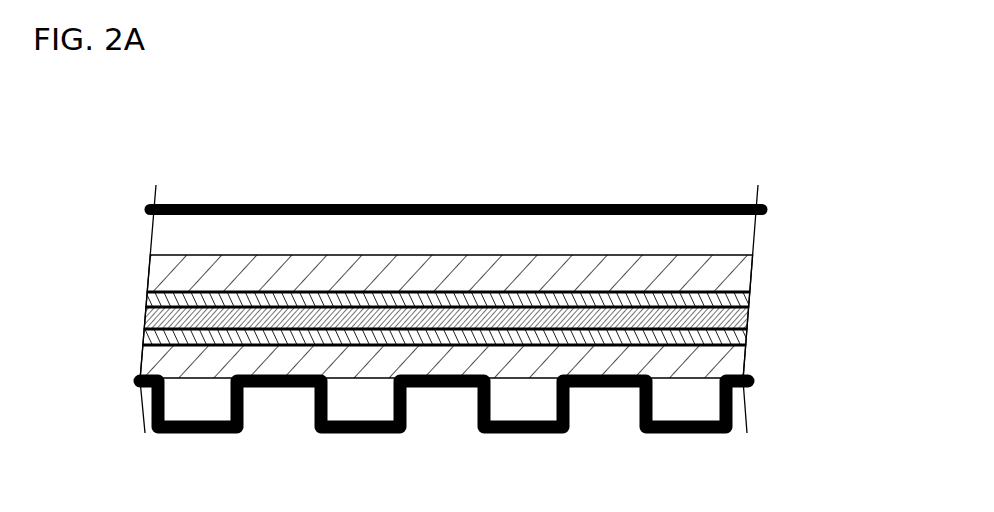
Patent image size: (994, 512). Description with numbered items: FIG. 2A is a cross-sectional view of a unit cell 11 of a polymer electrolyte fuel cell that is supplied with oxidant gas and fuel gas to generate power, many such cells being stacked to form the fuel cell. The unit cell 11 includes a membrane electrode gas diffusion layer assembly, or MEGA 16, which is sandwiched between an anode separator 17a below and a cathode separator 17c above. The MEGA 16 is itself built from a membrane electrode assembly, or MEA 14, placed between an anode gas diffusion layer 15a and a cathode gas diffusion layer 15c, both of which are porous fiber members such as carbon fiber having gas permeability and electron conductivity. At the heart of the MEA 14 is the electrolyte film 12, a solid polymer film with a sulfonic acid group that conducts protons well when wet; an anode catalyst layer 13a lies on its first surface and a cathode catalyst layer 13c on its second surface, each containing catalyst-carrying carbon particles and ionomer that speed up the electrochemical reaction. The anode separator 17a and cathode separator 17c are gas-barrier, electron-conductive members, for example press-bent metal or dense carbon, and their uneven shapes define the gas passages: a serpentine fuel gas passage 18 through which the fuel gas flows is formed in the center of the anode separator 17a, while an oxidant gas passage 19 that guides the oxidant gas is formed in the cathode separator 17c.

The unit cell 11 is at (544, 294).
The electrolyte film 12 is at (747, 320).
The anode catalyst layer 13a is at (746, 340).
The cathode catalyst layer 13c is at (746, 300).
The membrane electrode assembly 14 is at (524, 326).
The anode gas diffusion layer 15a is at (746, 367).
The cathode gas diffusion layer 15c is at (746, 268).
The membrane electrode gas diffusion layer assembly 16 is at (544, 322).
The anode separator 17a is at (717, 434).
The cathode separator 17c is at (673, 206).
The fuel gas passage 18 is at (681, 412).
The oxidant gas passage 19 is at (575, 226).